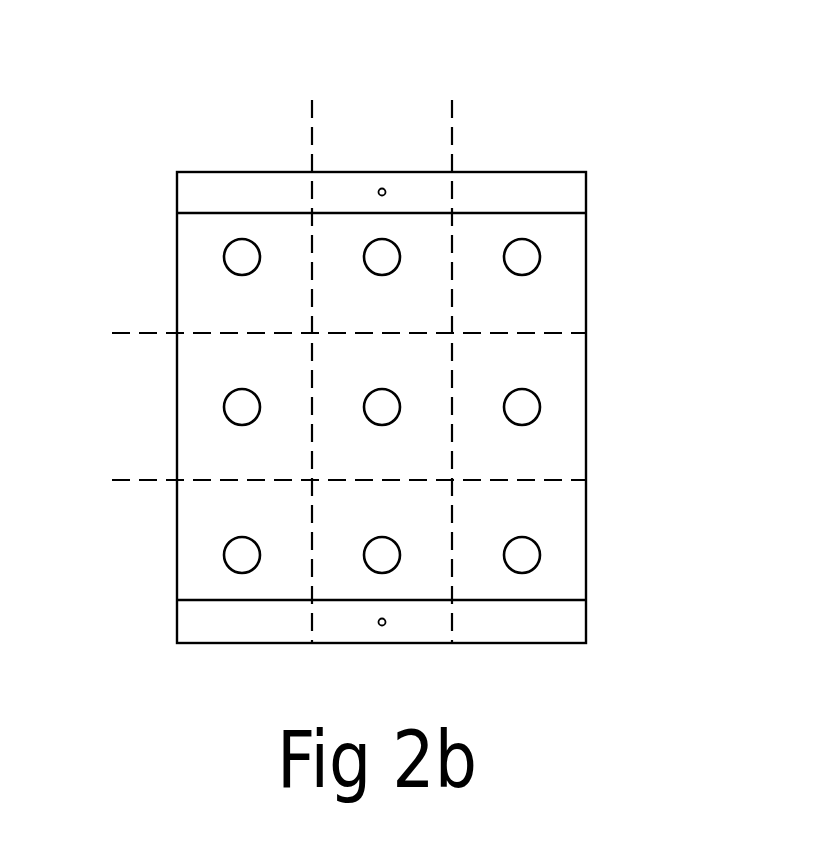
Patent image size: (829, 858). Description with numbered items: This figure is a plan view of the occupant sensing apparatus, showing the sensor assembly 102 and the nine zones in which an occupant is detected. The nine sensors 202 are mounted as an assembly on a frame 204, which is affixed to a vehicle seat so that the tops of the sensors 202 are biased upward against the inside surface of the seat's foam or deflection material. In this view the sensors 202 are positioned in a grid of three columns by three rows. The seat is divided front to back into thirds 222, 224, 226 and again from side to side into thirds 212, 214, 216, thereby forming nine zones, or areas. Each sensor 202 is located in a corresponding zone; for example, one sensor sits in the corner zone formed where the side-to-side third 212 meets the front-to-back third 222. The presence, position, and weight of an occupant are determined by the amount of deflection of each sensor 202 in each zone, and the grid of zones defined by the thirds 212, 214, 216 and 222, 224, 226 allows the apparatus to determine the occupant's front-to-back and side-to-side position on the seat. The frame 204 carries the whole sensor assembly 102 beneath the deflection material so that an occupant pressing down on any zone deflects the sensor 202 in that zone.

The sensor assembly 102 is at (714, 161).
The sensors 202 is at (540, 257).
The frame 204 is at (586, 619).
The side-to-side third 212 is at (312, 100).
The side-to-side third 214 is at (452, 100).
The side-to-side third 216 is at (592, 106).
The front-to-back third 222 is at (112, 183).
The front-to-back third 224 is at (112, 333).
The front-to-back third 226 is at (112, 480).